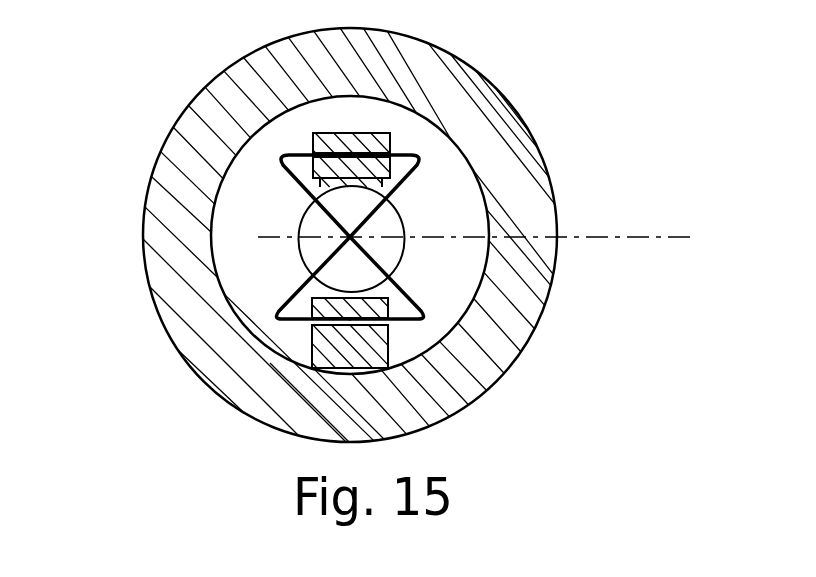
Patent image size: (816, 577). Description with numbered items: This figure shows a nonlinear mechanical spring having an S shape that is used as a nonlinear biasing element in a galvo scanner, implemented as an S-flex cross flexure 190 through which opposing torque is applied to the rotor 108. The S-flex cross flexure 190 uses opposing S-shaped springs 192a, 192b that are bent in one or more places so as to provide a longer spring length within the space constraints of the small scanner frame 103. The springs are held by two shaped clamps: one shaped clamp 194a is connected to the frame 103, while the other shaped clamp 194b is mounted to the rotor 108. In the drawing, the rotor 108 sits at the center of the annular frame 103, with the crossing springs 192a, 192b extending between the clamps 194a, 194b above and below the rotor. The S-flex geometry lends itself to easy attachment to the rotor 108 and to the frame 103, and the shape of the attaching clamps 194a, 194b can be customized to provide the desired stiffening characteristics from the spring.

The S-flex cross flexure 190 is at (655, 66).
The scanner frame 103 is at (457, 404).
The rotor 108 is at (405, 220).
The S-shaped spring 192a is at (413, 290).
The S-shaped spring 192b is at (293, 295).
The shaped clamp 194a is at (393, 348).
The shaped clamp 194b is at (393, 158).